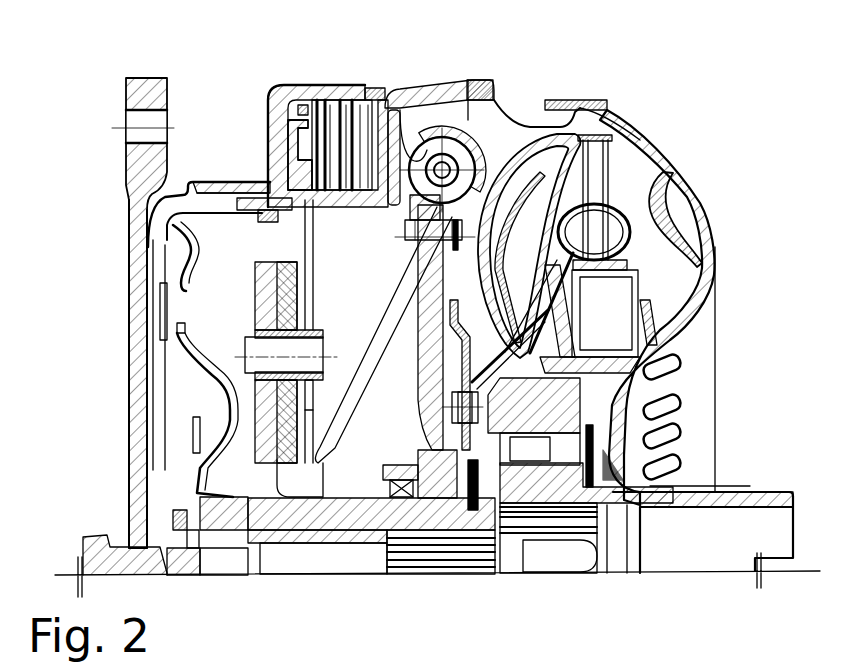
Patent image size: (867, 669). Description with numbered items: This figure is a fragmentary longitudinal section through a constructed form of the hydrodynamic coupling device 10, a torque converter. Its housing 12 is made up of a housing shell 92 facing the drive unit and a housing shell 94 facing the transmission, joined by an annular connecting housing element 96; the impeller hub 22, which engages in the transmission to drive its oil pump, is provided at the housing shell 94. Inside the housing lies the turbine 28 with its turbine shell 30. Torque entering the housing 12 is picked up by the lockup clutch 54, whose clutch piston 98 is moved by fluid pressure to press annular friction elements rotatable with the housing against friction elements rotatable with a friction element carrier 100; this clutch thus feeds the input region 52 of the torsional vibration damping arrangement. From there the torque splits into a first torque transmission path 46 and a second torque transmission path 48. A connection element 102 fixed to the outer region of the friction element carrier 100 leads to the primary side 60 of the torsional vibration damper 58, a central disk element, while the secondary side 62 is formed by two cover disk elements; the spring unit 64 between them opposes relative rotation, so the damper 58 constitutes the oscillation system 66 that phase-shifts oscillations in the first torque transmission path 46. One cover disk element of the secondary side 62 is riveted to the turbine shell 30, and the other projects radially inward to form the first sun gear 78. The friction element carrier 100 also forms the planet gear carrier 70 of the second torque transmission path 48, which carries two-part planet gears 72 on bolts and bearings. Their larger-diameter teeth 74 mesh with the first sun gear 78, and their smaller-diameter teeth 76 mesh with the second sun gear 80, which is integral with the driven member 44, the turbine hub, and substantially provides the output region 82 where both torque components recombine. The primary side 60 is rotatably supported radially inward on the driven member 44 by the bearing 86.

The hydrodynamic coupling device 10 is at (690, 68).
The housing 12 is at (500, 118).
The impeller hub 22 is at (773, 497).
The turbine 28 is at (630, 137).
The turbine shell 30 is at (548, 372).
The driven member 44 is at (366, 517).
The first torque transmission path 46 is at (453, 112).
The second torque transmission path 48 is at (556, 252).
The input region 52 is at (427, 105).
The lockup clutch 54 is at (333, 97).
The torsional vibration damper 58 is at (600, 124).
The primary side 60 is at (548, 305).
The secondary side 62 is at (662, 175).
The spring unit 64 is at (497, 149).
The oscillation system 66 is at (565, 99).
The planet gear carrier 70 is at (288, 215).
The planet gears 72 is at (252, 306).
The teeth 74 is at (255, 215).
The teeth 76 is at (175, 253).
The first sun gear 78 is at (313, 462).
The second sun gear 80 is at (250, 533).
The output region 82 is at (283, 510).
The bearing 86 is at (583, 470).
The housing shell 92 is at (180, 367).
The housing shell 94 is at (717, 248).
The annular connecting housing element 96 is at (393, 97).
The clutch piston 98 is at (282, 140).
The friction element carrier 100 is at (358, 108).
The connection element 102 is at (458, 158).